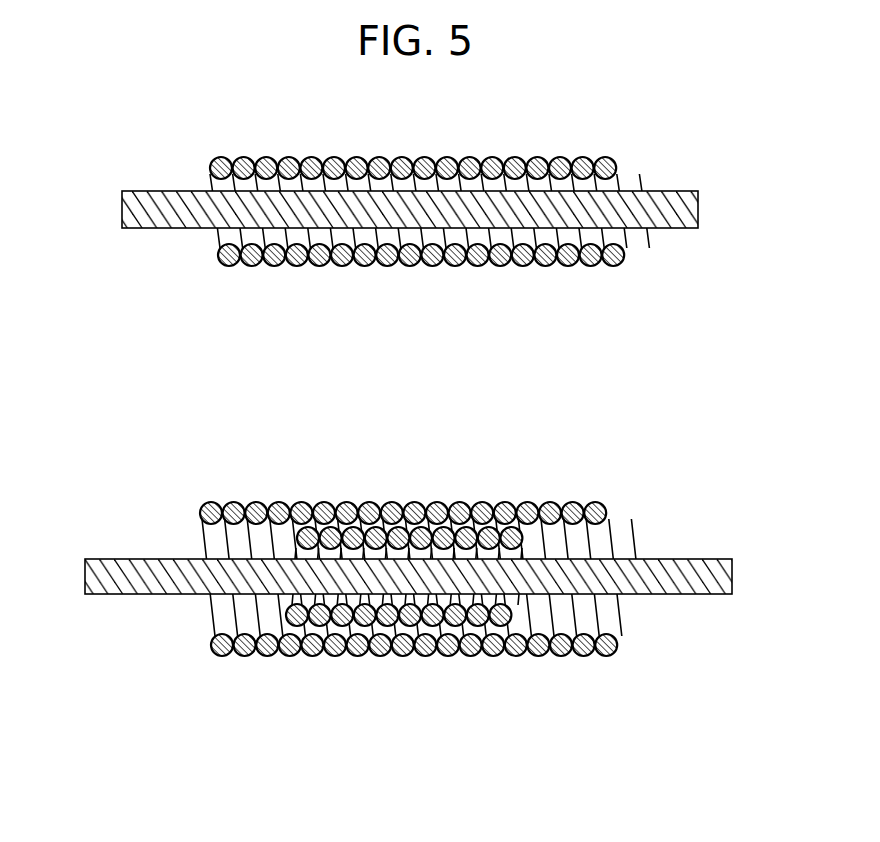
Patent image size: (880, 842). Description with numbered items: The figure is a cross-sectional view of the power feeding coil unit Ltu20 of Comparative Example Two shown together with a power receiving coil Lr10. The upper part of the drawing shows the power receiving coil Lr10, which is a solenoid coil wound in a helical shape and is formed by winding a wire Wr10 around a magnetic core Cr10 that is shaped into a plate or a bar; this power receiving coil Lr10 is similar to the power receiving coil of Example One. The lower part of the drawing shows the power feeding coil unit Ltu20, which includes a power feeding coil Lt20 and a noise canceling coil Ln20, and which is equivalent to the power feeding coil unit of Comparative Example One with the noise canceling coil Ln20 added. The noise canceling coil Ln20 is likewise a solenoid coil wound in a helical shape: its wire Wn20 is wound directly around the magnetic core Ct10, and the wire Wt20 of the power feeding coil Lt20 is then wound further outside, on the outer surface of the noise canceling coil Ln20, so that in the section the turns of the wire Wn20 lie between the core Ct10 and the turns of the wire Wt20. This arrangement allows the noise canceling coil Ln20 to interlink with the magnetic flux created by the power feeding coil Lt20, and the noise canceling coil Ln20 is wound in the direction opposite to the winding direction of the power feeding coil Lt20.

The magnetic core Cr10 is at (337, 212).
The wire Wr10 is at (432, 265).
The power receiving coil Lr10 is at (472, 359).
The magnetic core Ct10 is at (142, 590).
The wire Wt20 is at (218, 655).
The wire Wn20 is at (510, 622).
The power feeding coil Lt20 is at (273, 724).
The noise canceling coil Ln20 is at (718, 724).
The power feeding coil unit Ltu20 is at (732, 777).